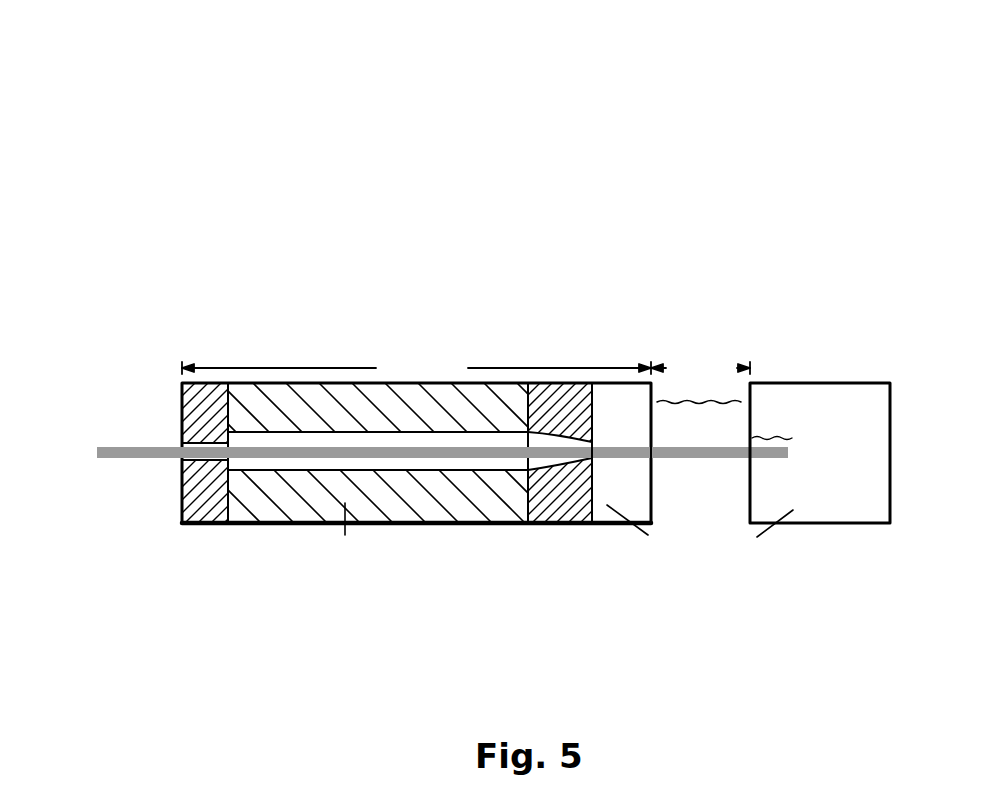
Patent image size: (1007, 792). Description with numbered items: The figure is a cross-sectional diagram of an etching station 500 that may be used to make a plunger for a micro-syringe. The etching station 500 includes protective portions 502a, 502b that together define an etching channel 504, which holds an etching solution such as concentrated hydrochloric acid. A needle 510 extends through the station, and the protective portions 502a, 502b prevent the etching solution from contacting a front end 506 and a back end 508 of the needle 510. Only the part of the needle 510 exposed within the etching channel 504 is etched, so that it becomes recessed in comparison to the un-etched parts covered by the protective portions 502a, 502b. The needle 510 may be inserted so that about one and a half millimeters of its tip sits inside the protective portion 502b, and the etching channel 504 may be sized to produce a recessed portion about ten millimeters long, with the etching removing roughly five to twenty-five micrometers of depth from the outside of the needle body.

The etching station 500 is at (466, 343).
The protective portion 502a is at (615, 398).
The protective portion 502b is at (828, 400).
The etching channel 504 is at (713, 352).
The front end 506 is at (787, 458).
The back end 508 is at (627, 458).
The needle 510 is at (398, 462).